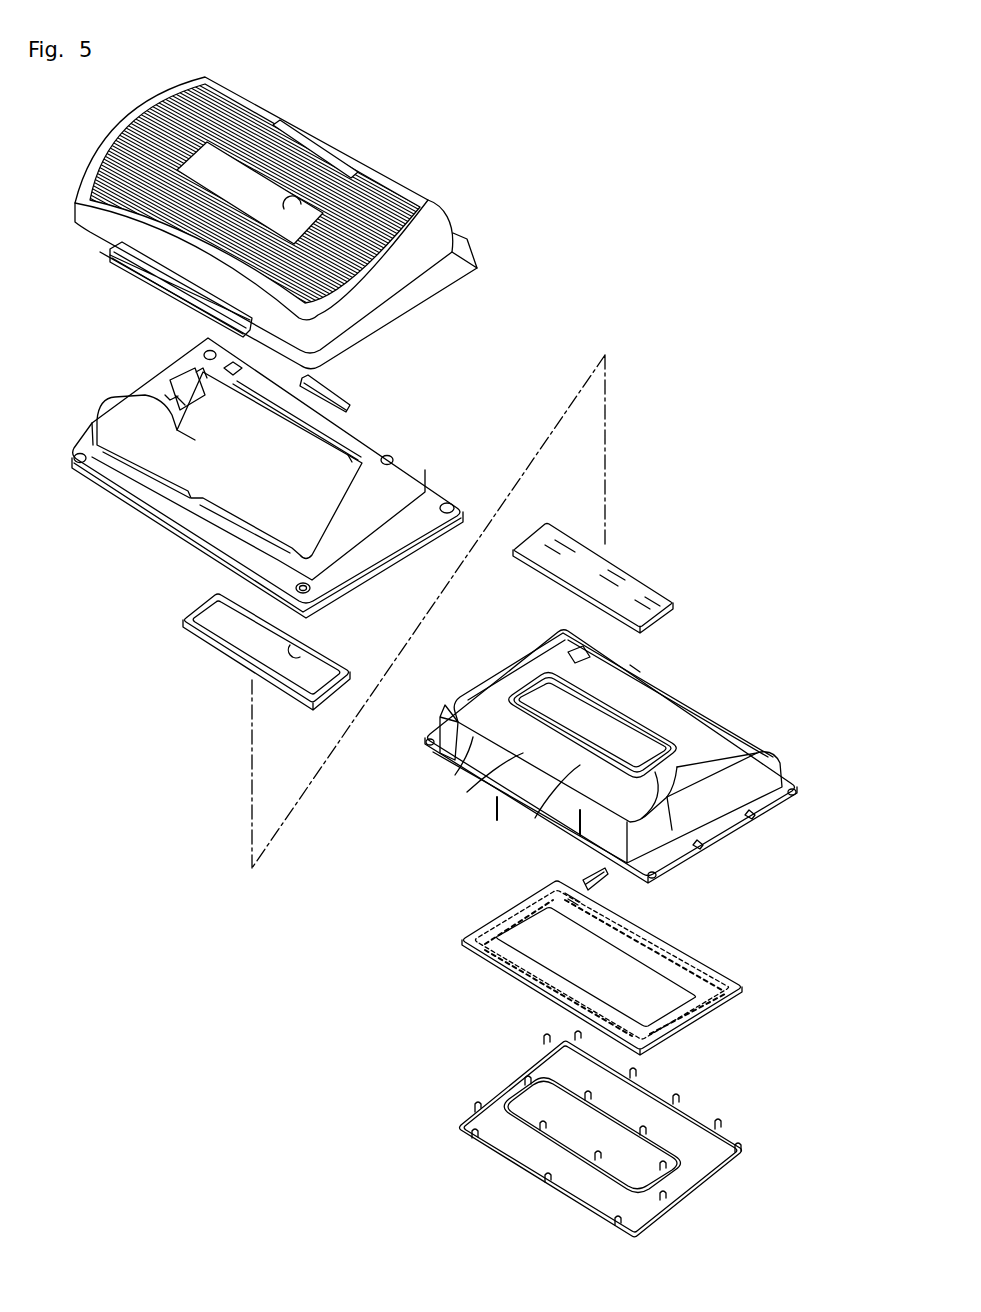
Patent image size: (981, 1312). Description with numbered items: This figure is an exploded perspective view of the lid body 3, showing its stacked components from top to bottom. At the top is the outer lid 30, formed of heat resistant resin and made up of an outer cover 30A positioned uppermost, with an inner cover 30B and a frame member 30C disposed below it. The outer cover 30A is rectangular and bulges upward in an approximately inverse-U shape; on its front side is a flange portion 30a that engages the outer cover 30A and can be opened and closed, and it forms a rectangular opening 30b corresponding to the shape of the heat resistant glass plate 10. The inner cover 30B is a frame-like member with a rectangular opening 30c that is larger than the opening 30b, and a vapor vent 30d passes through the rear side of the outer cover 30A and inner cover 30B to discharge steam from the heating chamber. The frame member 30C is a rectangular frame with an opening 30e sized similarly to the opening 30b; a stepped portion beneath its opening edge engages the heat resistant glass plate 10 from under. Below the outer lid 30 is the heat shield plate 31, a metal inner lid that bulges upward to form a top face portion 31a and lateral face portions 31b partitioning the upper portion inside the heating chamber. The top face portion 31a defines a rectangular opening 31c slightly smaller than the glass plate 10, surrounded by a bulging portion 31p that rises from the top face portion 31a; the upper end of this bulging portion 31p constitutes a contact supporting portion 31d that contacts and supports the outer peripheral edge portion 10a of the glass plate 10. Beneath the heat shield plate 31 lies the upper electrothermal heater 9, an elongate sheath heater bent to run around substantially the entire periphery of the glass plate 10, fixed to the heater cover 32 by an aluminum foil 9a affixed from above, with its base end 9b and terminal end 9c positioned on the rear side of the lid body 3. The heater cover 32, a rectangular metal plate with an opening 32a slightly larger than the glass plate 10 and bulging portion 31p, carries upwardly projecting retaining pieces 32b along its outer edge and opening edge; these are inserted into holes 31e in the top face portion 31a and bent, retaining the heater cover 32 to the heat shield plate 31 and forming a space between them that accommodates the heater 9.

The lid body 3 is at (608, 247).
The outer lid 30 is at (196, 702).
The outer cover 30A is at (100, 248).
The inner cover 30B is at (160, 523).
The frame member 30C is at (210, 646).
The flange portion 30a is at (163, 281).
The opening 30b is at (366, 164).
The opening 30c is at (250, 520).
The vapor vent 30d is at (333, 393).
The opening 30e is at (310, 657).
The heat resistant glass plate 10 is at (640, 590).
The outer peripheral edge portion 10a is at (617, 560).
The heat shield plate 31 is at (718, 721).
The top face portion 31a is at (653, 710).
The lateral face portions 31b is at (757, 780).
The opening 31c is at (667, 770).
The contact supporting portion 31d is at (580, 747).
The holes 31e is at (587, 693).
The bulging portion 31p is at (533, 688).
The upper electrothermal heater 9 is at (487, 963).
The aluminum foil 9a is at (693, 960).
The base end 9b is at (593, 877).
The terminal end 9c is at (600, 900).
The heater cover 32 is at (708, 1118).
The opening 32a is at (593, 1107).
The retaining pieces 32b is at (665, 1160).